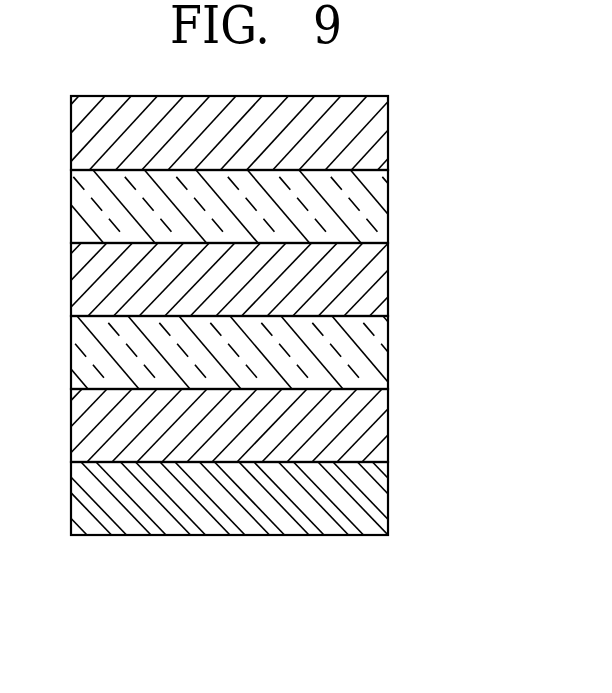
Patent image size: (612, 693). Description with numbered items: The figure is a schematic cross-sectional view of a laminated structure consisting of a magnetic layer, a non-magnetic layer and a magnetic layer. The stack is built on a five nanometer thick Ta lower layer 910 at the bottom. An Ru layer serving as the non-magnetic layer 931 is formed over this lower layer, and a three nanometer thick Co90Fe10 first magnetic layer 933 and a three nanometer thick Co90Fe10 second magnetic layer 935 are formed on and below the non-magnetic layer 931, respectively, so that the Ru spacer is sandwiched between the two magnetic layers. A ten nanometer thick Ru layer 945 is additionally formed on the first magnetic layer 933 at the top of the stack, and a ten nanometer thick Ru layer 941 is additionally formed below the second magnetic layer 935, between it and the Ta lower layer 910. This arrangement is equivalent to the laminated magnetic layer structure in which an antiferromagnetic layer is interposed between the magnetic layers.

The Ru layer 945 is at (372, 142).
The first magnetic layer 933 is at (372, 215).
The non-magnetic layer 931 is at (372, 288).
The second magnetic layer 935 is at (372, 357).
The Ru layer 941 is at (372, 428).
The Ta lower layer 910 is at (372, 500).